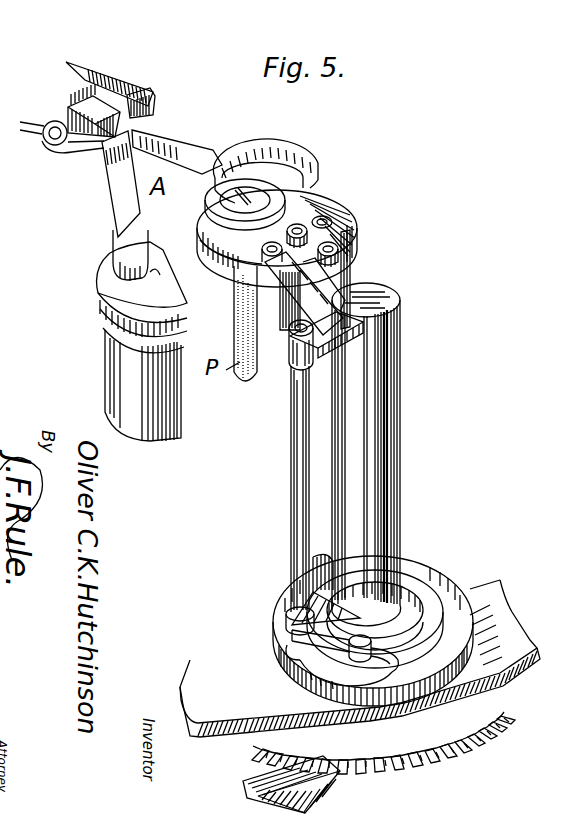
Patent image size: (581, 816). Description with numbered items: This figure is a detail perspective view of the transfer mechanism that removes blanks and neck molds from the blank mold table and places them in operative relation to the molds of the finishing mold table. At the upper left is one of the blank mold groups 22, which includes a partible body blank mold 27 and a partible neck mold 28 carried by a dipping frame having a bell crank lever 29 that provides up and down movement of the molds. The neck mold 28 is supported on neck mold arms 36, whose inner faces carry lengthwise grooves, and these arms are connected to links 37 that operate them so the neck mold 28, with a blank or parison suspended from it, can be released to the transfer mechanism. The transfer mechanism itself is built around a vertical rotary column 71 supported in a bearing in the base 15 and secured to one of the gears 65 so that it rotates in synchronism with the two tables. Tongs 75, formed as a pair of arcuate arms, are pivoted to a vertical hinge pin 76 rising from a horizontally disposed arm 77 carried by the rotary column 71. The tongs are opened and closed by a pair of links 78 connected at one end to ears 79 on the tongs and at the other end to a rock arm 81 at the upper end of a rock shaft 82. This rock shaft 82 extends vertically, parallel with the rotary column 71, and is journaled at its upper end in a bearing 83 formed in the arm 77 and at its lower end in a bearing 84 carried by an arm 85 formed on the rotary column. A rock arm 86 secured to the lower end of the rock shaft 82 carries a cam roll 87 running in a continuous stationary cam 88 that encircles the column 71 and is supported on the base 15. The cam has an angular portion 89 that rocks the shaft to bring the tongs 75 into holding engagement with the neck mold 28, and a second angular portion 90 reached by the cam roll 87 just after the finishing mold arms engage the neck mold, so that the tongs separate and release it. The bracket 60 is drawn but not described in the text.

The base 15 is at (500, 605).
The blank mold group 22 is at (147, 53).
The body blank mold 27 is at (117, 367).
The neck mold 28 is at (207, 198).
The bell crank lever 29 is at (152, 108).
The neck mold arms 36 is at (202, 145).
The links 37 is at (40, 138).
The bracket 60 is at (338, 263).
The gears 65 is at (478, 740).
The rotary column 71 is at (380, 471).
The tongs 75 is at (296, 206).
The vertical hinge pin 76 is at (322, 222).
The arm 77 is at (289, 335).
The links 78 is at (342, 238).
The ears 79 is at (244, 284).
The rock arm 81 is at (358, 285).
The rock shaft 82 is at (300, 478).
The bearing 83 is at (300, 366).
The bearing 84 is at (300, 646).
The arm 85 is at (322, 601).
The rock arm 86 is at (305, 657).
The cam roll 87 is at (330, 670).
The stationary cam 88 is at (432, 585).
The angular portion 89 is at (366, 690).
The angular portion 90 is at (313, 558).